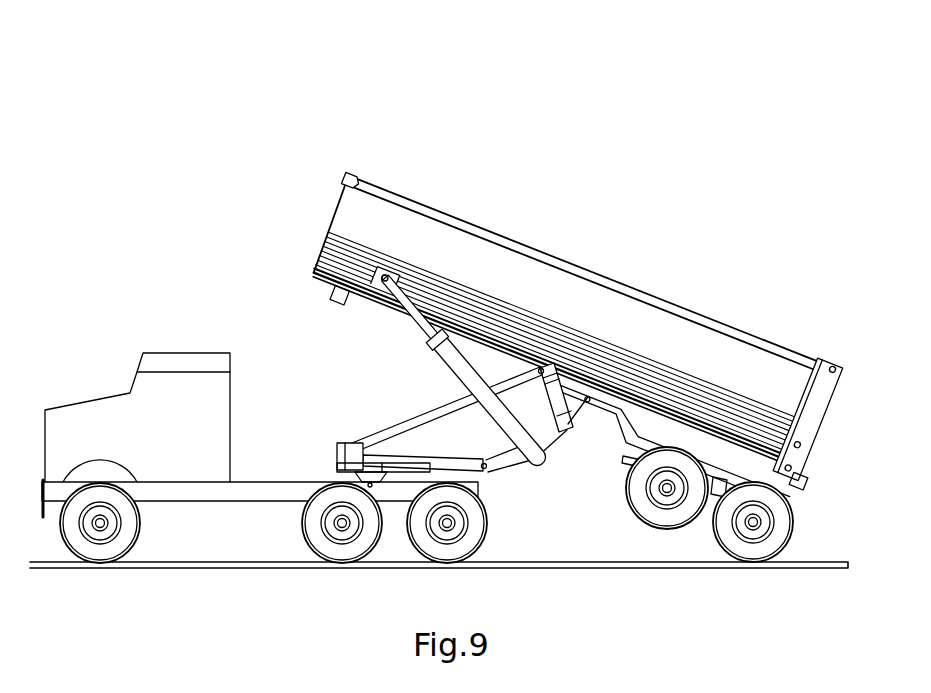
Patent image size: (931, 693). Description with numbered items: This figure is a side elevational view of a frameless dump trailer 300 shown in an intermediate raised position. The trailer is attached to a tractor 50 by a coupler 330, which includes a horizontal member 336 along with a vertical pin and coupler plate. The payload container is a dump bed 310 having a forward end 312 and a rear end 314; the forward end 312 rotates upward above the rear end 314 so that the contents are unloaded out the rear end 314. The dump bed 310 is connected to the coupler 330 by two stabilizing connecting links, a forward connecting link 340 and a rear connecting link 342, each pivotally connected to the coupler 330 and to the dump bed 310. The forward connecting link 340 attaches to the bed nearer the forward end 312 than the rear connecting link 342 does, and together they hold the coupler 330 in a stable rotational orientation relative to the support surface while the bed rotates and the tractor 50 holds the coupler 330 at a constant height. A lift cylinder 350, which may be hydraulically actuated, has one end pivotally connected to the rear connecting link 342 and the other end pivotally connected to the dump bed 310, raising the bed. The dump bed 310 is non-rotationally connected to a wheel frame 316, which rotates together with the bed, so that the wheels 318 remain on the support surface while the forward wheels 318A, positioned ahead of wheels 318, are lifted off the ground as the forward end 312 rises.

The frameless dump trailer 300 is at (536, 68).
The tractor 50 is at (160, 346).
The dump bed 310 is at (578, 262).
The forward end 312 is at (356, 175).
The rear end 314 is at (821, 361).
The wheel frame 316 is at (710, 446).
The wheels 318 is at (750, 553).
The forward wheels 318A is at (658, 522).
The coupler 330 is at (311, 456).
The horizontal member 336 is at (421, 455).
The forward connecting link 340 is at (402, 421).
The rear connecting link 342 is at (553, 437).
The lift cylinder 350 is at (439, 356).